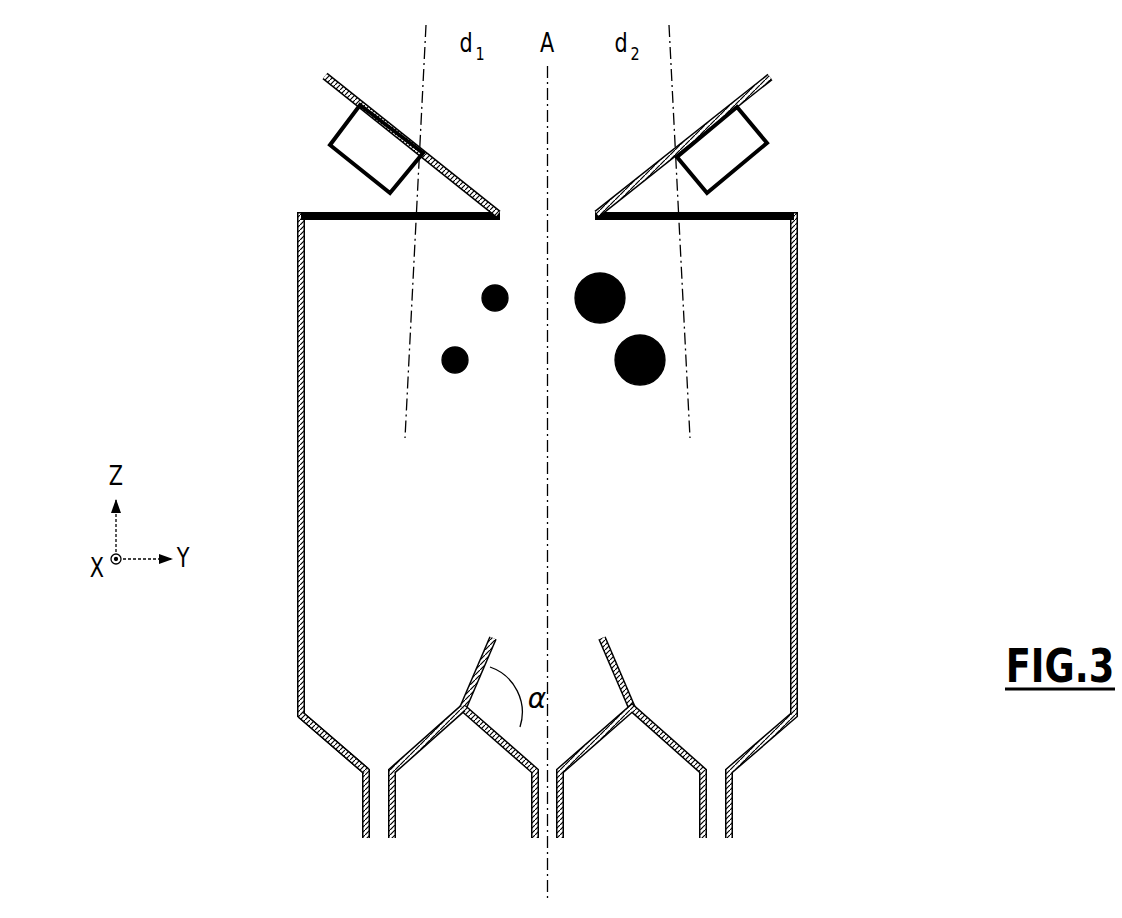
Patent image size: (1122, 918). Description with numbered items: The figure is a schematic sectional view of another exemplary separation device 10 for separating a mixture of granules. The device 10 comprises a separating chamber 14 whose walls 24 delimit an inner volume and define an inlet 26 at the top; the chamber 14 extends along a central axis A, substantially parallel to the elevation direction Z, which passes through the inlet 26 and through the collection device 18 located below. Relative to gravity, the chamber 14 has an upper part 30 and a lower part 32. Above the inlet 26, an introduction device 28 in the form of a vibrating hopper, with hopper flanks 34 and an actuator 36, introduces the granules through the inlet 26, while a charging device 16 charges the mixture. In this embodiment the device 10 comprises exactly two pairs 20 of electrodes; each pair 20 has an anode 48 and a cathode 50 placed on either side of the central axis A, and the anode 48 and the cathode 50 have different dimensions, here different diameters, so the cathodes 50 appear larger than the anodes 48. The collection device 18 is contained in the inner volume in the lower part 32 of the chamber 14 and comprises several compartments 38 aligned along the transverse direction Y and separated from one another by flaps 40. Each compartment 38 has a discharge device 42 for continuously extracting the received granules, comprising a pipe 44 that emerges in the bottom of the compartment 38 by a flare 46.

The separation device 10 is at (872, 168).
The separating chamber 14 is at (806, 531).
The charging device 16 is at (703, 96).
The collection device 18 is at (580, 718).
The pair of electrodes 20 is at (612, 388).
The walls 24 is at (798, 332).
The inlet 26 is at (513, 220).
The introduction device 28 is at (660, 92).
The upper part 30 is at (701, 273).
The lower part 32 is at (701, 619).
The hopper flanks 34 is at (342, 96).
The actuator 36 is at (360, 152).
The compartments 38 is at (369, 703).
The flaps 40 is at (497, 636).
The discharge device 42 is at (434, 755).
The pipe 44 is at (362, 806).
The flare 46 is at (337, 750).
The anode 48 is at (460, 375).
The cathode 50 is at (666, 356).